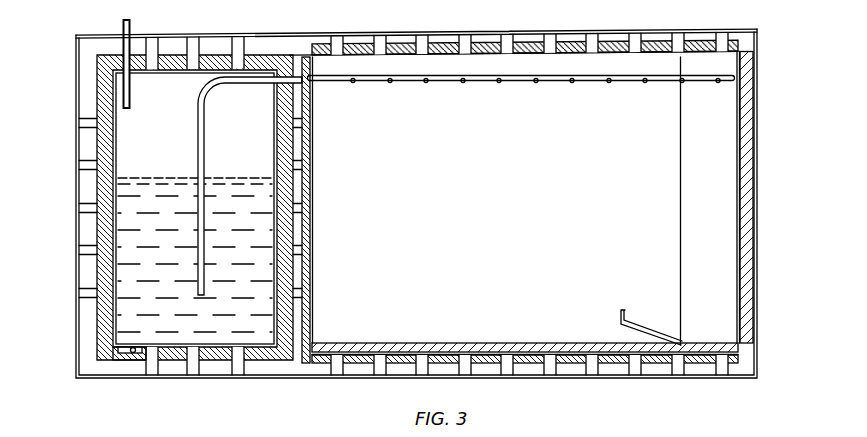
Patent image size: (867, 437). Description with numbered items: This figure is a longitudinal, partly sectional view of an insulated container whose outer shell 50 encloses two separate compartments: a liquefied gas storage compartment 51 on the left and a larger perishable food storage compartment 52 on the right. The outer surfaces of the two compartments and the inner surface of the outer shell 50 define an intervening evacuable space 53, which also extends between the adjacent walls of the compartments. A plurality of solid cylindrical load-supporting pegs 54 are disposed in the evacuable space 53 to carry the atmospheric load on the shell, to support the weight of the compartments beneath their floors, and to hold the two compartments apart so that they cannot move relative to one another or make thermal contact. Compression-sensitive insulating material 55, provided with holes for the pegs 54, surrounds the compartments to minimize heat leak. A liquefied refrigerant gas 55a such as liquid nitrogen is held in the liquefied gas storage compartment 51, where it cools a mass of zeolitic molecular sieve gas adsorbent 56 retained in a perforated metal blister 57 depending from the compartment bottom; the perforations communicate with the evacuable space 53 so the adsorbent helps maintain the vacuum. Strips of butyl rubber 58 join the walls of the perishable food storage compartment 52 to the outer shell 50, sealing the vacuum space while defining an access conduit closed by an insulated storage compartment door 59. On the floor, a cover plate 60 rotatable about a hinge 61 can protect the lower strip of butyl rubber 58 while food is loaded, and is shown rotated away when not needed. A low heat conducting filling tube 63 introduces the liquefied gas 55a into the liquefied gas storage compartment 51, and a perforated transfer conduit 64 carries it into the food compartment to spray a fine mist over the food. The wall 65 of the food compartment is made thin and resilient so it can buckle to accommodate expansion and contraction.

The outer shell 50 is at (519, 45).
The liquefied gas storage compartment 51 is at (164, 86).
The perishable food storage compartment 52 is at (500, 144).
The evacuable space 53 is at (295, 52).
The load-supporting pegs 54 is at (378, 44).
The compression-sensitive insulating material 55 is at (444, 45).
The liquefied refrigerant gas 55a is at (130, 228).
The zeolitic molecular sieve gas adsorbent 56 is at (126, 352).
The perforated metal blister 57 is at (133, 354).
The strips of butyl rubber 58 is at (709, 353).
The insulated storage compartment door 59 is at (754, 195).
The cover plate 60 is at (643, 326).
The hinge 61 is at (683, 346).
The filling tube 63 is at (123, 26).
The transfer conduit 64 is at (621, 81).
The wall 65 is at (313, 263).